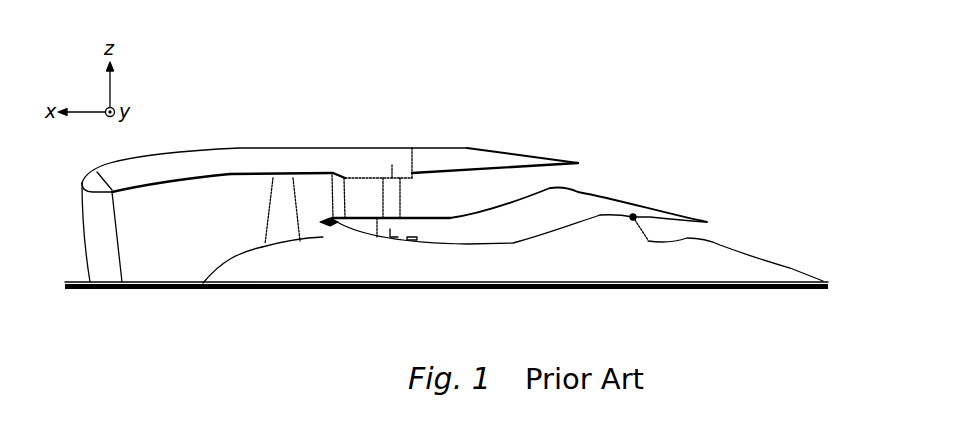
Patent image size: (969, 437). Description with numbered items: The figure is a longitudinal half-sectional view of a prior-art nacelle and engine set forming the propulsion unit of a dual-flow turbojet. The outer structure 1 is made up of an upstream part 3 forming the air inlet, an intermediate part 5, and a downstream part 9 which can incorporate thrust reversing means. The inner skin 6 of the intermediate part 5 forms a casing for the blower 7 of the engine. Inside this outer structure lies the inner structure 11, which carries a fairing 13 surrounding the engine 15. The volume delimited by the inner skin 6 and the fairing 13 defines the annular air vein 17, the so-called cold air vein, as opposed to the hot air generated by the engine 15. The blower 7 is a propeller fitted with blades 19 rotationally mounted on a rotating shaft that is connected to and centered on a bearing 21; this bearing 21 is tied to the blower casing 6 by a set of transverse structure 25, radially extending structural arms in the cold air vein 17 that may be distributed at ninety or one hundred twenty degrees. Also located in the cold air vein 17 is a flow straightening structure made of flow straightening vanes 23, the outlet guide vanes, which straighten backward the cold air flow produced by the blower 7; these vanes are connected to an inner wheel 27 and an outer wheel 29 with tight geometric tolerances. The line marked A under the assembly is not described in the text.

The outer structure 1 is at (233, 103).
The upstream part 3 is at (155, 155).
The intermediate part 5 is at (384, 146).
The inner skin 6 is at (302, 174).
The blower 7 is at (210, 257).
The downstream part 9 is at (477, 147).
The inner structure 11 is at (578, 192).
The fairing 13 is at (492, 208).
The engine 15 is at (578, 250).
The annular air vein 17 is at (522, 183).
The blades 19 is at (282, 213).
The bearing 21 is at (290, 263).
The flow straightening vanes 23 is at (340, 193).
The transverse structure 25 is at (390, 195).
The inner wheel 27 is at (327, 228).
The outer wheel 29 is at (348, 181).
The reference plane A is at (747, 282).